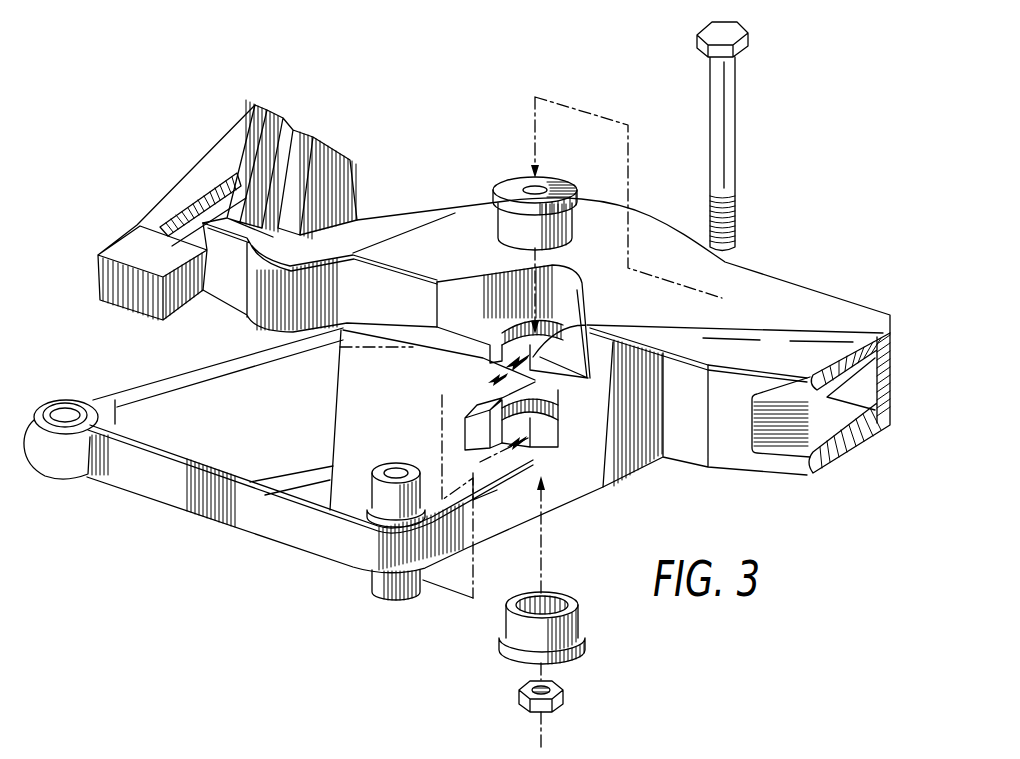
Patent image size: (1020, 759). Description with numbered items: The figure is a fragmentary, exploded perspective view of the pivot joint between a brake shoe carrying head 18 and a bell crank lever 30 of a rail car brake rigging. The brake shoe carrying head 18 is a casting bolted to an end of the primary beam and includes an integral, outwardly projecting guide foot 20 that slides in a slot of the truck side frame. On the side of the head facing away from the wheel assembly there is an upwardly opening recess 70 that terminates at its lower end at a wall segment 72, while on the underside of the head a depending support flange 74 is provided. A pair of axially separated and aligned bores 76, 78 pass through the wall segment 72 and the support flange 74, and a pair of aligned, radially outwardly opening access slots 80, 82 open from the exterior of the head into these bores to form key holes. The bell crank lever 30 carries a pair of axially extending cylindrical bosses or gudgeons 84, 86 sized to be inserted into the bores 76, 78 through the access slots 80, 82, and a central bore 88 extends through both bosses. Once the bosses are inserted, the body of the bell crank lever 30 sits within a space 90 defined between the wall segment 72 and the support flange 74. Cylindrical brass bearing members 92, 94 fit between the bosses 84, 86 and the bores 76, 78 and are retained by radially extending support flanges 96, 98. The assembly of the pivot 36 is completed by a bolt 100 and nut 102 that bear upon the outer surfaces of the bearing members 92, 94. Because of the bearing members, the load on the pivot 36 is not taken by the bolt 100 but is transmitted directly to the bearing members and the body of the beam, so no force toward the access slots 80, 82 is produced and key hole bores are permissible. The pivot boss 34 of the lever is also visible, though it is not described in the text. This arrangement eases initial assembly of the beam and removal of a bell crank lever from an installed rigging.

The brake shoe carrying head 18 is at (637, 453).
The guide foot 20 is at (127, 248).
The bell crank lever 30 is at (260, 475).
The pivot boss 34 is at (158, 483).
The pivot 36 is at (404, 376).
The upwardly opening recess 70 is at (530, 311).
The wall segment 72 is at (476, 333).
The depending support flange 74 is at (567, 462).
The bore 76 is at (564, 321).
The bore 78 is at (545, 419).
The access slot 80 is at (483, 357).
The access slot 82 is at (487, 447).
The cylindrical boss 84 is at (383, 472).
The cylindrical boss 86 is at (377, 573).
The central bore 88 is at (397, 468).
The space 90 is at (515, 376).
The bearing member 92 is at (552, 201).
The bearing member 94 is at (577, 620).
The support flange 96 is at (590, 178).
The support flange 98 is at (578, 647).
The bolt 100 is at (735, 107).
The nut 102 is at (565, 703).